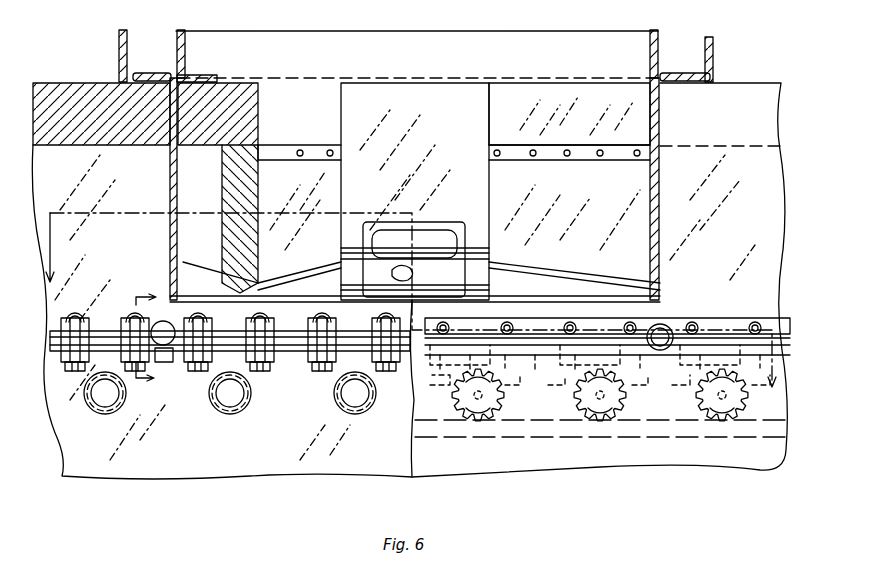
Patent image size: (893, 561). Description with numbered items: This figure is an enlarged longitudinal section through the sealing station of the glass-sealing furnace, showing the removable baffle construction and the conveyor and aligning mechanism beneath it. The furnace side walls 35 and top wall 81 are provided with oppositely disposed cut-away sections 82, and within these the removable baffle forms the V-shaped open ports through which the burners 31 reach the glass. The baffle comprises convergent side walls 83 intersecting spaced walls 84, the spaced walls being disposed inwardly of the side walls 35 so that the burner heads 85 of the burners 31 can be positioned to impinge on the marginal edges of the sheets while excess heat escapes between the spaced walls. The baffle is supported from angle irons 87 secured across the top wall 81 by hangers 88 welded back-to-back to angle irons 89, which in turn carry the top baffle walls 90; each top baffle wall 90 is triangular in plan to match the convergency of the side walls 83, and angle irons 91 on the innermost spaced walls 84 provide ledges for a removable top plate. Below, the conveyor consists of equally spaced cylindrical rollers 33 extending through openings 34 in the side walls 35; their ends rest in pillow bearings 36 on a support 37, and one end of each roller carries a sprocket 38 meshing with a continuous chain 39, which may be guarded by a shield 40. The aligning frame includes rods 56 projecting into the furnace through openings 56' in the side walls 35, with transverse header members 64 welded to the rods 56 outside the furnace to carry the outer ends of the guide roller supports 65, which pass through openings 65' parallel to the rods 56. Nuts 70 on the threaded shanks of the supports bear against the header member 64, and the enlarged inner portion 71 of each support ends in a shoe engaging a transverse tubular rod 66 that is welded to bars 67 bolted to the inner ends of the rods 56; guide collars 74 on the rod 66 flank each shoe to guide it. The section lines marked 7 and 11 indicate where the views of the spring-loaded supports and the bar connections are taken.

The section line 7- 7 is at (58, 306).
The section line 11- 11 is at (146, 294).
The burner 31 is at (404, 250).
The cylindrical roller 33 is at (91, 402).
The opening 34 is at (98, 410).
The side wall 35 is at (283, 458).
The pillow bearing 36 is at (565, 414).
The support 37 is at (668, 441).
The sprocket 38 is at (693, 404).
The continuous chain 39 is at (480, 420).
The shield 40 is at (583, 447).
The rod 56 is at (426, 309).
The opening 56' is at (218, 290).
The transverse header member 64 is at (723, 330).
The guide roller support 65 is at (105, 331).
The opening 65' is at (101, 304).
The tubular rod 66 is at (292, 360).
The bar 67 is at (165, 362).
The nut 70 is at (634, 324).
The enlarged inner portion 71 is at (316, 320).
The guide collar 74 is at (376, 342).
The top wall 81 is at (68, 110).
The cut-away section 82 is at (170, 160).
The convergent side wall 83 is at (257, 190).
The spaced wall 84 is at (385, 108).
The burner head 85 is at (415, 248).
The angle iron 87 is at (127, 40).
The hanger 88 is at (172, 62).
The angle iron 89 is at (184, 48).
The top baffle wall 90 is at (222, 105).
The angle iron 91 is at (331, 62).